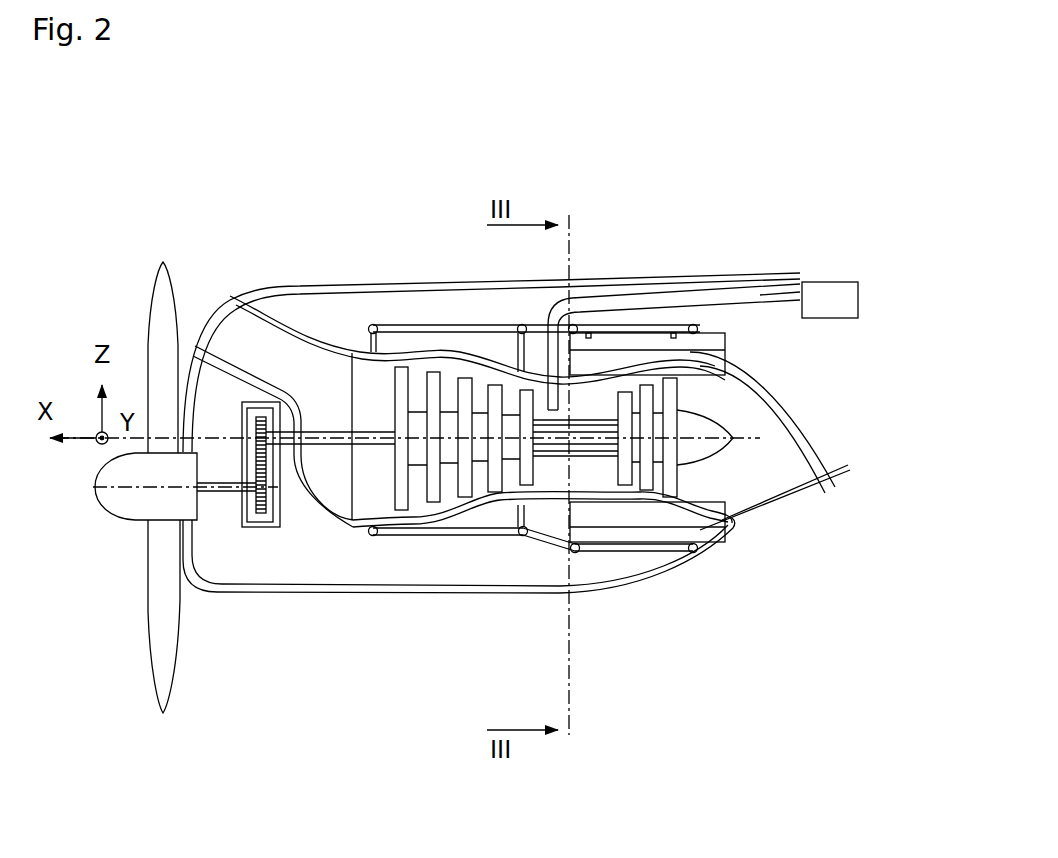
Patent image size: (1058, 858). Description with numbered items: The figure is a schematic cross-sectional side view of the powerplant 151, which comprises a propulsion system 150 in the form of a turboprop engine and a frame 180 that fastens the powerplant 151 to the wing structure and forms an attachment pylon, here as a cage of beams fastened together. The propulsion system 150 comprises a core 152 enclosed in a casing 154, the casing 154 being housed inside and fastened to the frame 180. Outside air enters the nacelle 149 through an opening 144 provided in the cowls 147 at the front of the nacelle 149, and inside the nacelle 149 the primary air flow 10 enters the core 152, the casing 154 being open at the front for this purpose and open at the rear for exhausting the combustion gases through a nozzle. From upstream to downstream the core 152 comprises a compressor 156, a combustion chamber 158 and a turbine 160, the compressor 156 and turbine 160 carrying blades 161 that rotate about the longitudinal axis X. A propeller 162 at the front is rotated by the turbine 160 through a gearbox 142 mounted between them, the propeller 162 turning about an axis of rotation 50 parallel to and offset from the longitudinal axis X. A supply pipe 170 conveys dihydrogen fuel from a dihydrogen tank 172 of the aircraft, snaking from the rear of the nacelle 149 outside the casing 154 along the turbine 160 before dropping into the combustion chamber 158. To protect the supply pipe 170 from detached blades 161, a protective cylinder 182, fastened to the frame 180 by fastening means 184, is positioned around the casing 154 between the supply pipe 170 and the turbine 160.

The primary air flow 10 is at (320, 385).
The axis of rotation 50 is at (125, 490).
The gearbox 142 is at (273, 518).
The opening 144 is at (222, 304).
The cowls 147 is at (420, 285).
The nacelle 149 is at (298, 266).
The propulsion system 150 is at (772, 634).
The powerplant 151 is at (172, 206).
The core 152 is at (606, 645).
The casing 154 is at (787, 413).
The compressor 156 is at (463, 487).
The combustion chamber 158 is at (553, 470).
The turbine 160 is at (673, 480).
The blades 161 is at (672, 392).
The propeller 162 is at (163, 570).
The supply pipe 170 is at (760, 295).
The dihydrogen tank 172 is at (830, 302).
The frame 180 is at (672, 548).
The protective cylinder 182 is at (655, 340).
The fastening means 184 is at (590, 333).